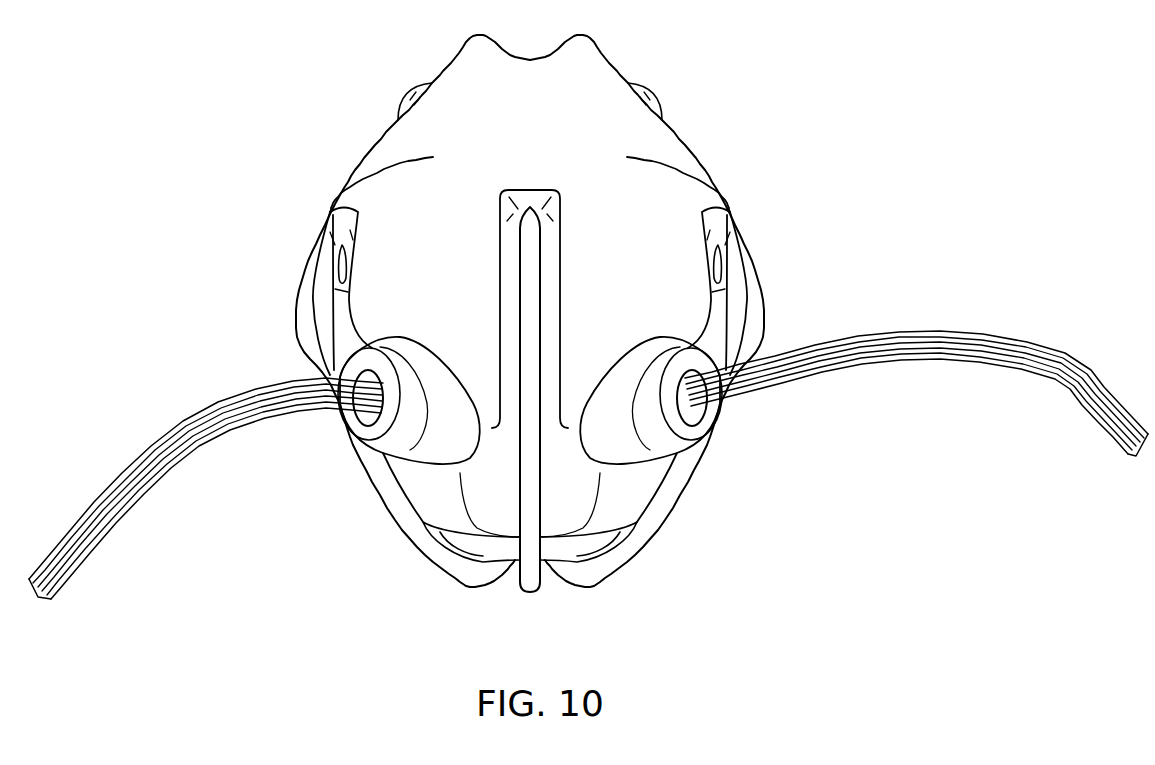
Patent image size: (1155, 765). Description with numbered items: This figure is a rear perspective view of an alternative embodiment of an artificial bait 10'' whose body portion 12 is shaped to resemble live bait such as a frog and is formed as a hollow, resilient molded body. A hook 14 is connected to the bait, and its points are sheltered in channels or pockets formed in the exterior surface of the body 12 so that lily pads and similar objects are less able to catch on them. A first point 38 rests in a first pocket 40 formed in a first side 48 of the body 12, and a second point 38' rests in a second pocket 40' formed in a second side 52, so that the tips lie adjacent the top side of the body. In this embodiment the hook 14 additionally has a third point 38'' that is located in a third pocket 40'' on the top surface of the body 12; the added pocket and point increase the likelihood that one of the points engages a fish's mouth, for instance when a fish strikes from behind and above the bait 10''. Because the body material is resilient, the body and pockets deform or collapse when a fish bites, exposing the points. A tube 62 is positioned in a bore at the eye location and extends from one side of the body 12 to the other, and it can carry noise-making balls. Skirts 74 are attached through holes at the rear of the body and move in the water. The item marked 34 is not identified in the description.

The bait 10'' is at (647, 130).
The body portion 12 is at (703, 190).
The hook 14 is at (390, 512).
The bottom ledge 34 is at (503, 550).
The first point 38 is at (758, 255).
The second point 38' is at (302, 260).
The third point 38'' is at (548, 369).
The first pocket 40 is at (744, 292).
The second pocket 40' is at (315, 292).
The third pocket 40'' is at (565, 282).
The first side 48 is at (718, 147).
The second side 52 is at (335, 186).
The tube 62 is at (407, 97).
The skirts 74 is at (120, 500).